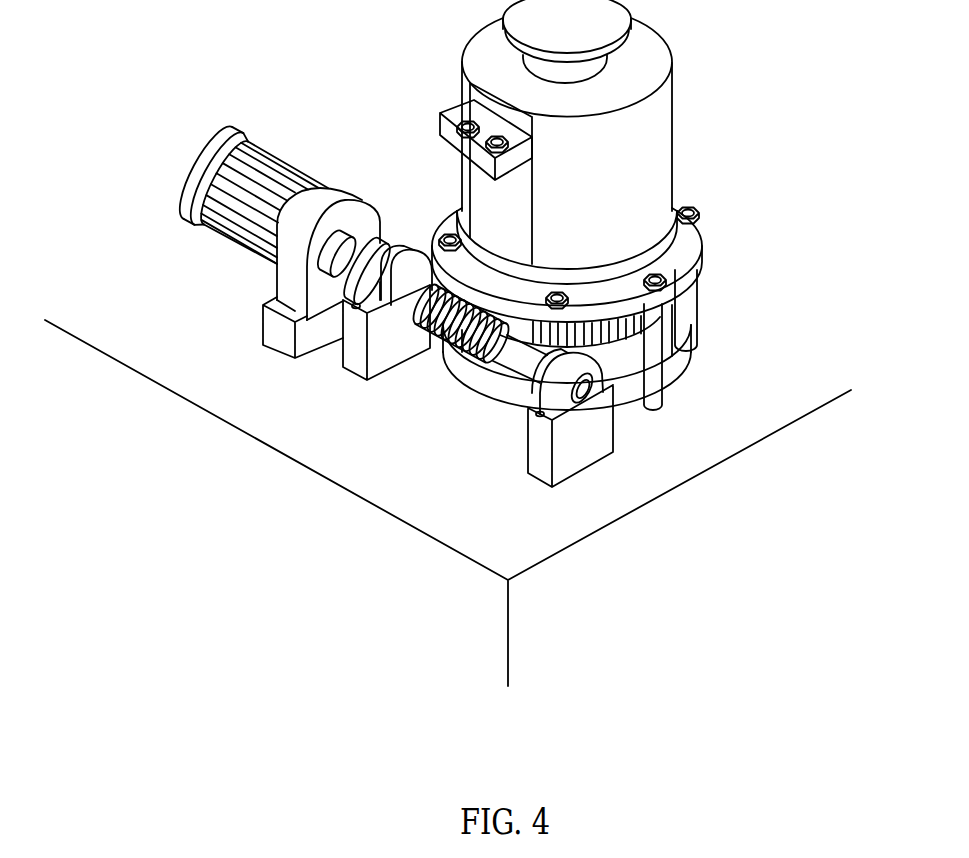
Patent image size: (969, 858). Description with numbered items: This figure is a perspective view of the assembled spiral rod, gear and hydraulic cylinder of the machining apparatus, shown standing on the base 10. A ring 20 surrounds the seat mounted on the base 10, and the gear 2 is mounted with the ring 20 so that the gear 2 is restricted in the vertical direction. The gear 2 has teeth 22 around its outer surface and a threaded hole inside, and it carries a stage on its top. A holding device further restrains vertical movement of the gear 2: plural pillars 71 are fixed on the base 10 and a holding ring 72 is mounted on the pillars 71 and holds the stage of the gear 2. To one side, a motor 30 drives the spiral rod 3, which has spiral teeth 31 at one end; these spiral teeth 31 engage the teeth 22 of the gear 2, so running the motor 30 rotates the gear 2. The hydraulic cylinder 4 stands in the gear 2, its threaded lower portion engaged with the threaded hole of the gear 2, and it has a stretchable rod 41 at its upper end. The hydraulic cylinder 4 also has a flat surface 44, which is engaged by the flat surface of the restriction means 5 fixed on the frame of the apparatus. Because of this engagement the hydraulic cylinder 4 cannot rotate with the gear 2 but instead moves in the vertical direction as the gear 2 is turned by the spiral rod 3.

The base 10 is at (667, 457).
The motor 30 is at (229, 145).
The spiral rod 3 is at (418, 294).
The spiral teeth 31 is at (453, 357).
The hydraulic cylinder 4 is at (632, 146).
The flat surface 44 is at (489, 196).
The stretchable rod 41 is at (588, 71).
The restriction means 5 is at (438, 112).
The holding ring 72 is at (690, 245).
The pillars 71 is at (690, 290).
The teeth 22 is at (630, 318).
The gear 2 is at (665, 328).
The ring 20 is at (663, 370).